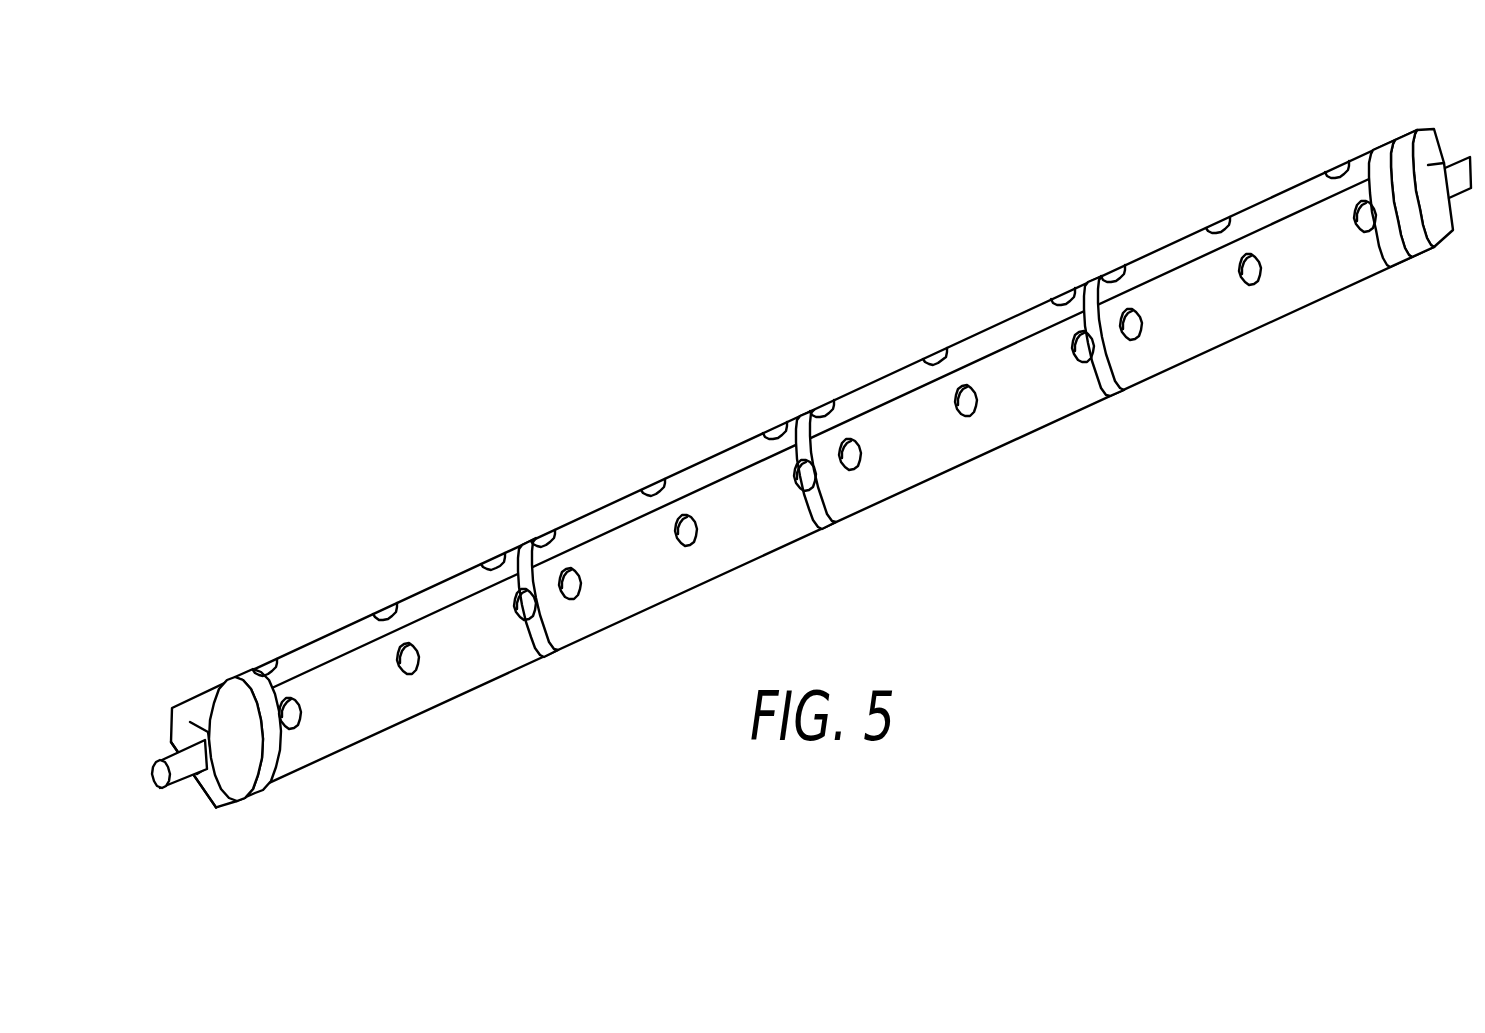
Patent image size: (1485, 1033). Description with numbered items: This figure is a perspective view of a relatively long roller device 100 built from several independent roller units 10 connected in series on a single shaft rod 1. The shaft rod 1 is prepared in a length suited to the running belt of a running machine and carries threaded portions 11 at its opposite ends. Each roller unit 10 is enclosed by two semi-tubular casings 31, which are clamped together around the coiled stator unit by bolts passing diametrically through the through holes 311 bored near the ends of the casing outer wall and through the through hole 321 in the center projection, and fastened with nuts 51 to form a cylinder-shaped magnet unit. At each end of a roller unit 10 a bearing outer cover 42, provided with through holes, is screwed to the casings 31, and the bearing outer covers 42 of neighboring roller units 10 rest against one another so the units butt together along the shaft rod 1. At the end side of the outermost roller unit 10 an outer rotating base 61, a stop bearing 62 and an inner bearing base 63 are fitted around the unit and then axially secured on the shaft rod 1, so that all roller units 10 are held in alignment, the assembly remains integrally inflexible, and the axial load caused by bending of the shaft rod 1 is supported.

The shaft rod 1 is at (168, 763).
The roller unit 10 is at (410, 590).
The roller device 100 is at (950, 305).
The threaded portion 11 is at (203, 793).
The casing 31 is at (1313, 290).
The through hole 311 is at (1100, 292).
The through hole 321 is at (1215, 238).
The bearing outer cover 42 is at (1120, 398).
The nut 51 is at (980, 416).
The outer rotating base 61 is at (256, 690).
The stop bearing 62 is at (263, 772).
The inner bearing base 63 is at (200, 712).